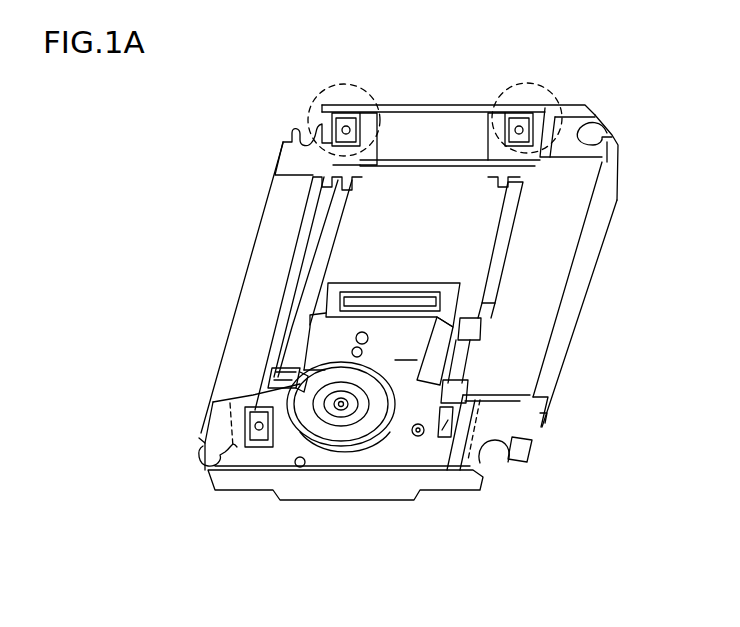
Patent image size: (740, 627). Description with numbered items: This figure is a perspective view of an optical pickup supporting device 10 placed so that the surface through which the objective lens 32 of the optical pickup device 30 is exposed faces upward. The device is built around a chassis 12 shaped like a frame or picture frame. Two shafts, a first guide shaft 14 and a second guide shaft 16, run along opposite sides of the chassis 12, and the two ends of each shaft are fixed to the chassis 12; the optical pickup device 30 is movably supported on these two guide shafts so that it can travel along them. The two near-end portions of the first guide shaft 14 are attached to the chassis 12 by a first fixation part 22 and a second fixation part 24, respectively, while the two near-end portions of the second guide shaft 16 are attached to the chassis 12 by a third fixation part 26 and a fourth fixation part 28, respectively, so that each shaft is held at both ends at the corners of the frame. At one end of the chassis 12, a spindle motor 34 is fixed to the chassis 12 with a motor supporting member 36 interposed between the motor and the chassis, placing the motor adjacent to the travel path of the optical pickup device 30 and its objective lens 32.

The optical pickup supporting device 10 is at (217, 53).
The chassis 12 is at (424, 104).
The first guide shaft 14 is at (495, 258).
The second guide shaft 16 is at (323, 243).
The first fixation part 22 is at (512, 428).
The second fixation part 24 is at (592, 122).
The third fixation part 26 is at (318, 108).
The fourth fixation part 28 is at (218, 447).
The optical pickup device 30 is at (415, 348).
The objective lens 32 is at (357, 342).
The spindle motor 34 is at (334, 433).
The motor supporting member 36 is at (400, 457).